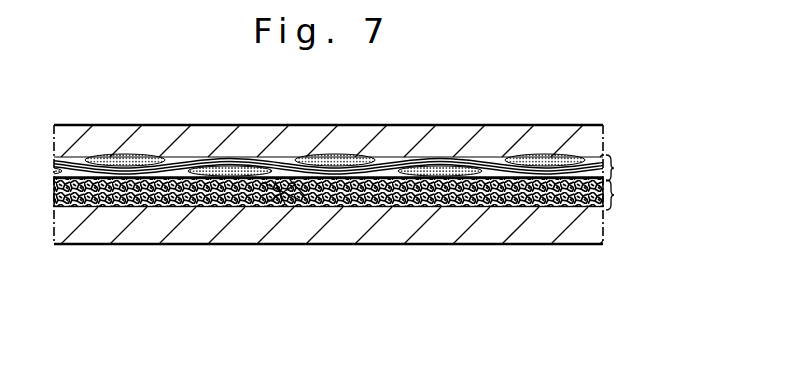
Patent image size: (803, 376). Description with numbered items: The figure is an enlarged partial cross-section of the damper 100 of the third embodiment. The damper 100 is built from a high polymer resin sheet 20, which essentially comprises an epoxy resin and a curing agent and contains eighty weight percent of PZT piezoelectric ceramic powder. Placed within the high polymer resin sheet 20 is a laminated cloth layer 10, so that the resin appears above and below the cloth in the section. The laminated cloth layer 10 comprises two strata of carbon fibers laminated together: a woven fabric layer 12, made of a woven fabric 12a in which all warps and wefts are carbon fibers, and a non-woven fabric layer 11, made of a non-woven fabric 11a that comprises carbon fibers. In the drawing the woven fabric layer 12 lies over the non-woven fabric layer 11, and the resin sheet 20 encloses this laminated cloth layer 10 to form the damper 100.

The damper 100 is at (422, 100).
The high polymer resin sheet 20 is at (510, 130).
The woven fabric layer 12 is at (616, 162).
The woven fabric 12a is at (138, 157).
The non-woven fabric layer 11 is at (616, 192).
The non-woven fabric 11a is at (283, 186).
The laminated cloth layer 10 is at (324, 225).